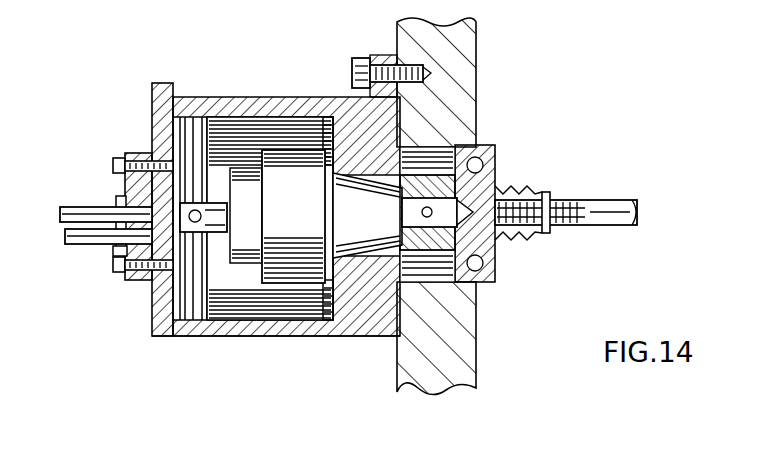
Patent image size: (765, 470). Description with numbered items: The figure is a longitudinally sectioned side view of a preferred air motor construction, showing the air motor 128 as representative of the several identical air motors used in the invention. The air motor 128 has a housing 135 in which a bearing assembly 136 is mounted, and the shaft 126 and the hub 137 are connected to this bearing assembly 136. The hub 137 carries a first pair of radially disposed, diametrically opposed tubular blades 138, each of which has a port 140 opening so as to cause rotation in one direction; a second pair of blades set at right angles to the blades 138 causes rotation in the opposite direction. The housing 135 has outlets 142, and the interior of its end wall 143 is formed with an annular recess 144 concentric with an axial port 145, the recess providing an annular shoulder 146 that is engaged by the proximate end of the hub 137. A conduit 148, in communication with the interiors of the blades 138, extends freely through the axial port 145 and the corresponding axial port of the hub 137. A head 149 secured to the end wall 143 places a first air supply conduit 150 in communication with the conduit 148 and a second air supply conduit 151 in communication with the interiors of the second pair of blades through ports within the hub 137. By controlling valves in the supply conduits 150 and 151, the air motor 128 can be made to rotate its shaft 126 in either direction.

The shaft 126 is at (608, 226).
The air motor 128 is at (376, 338).
The housing 135 is at (342, 338).
The bearing assembly 136 is at (293, 160).
The hub 137 is at (228, 209).
The tubular blades 138 is at (218, 120).
The port 140 is at (187, 110).
The outlets 142 is at (308, 338).
The end wall 143 is at (153, 313).
The annular recess 144 is at (140, 283).
The axial port 145 is at (123, 198).
The annular shoulder 146 is at (114, 252).
The conduit 148 is at (116, 200).
The head 149 is at (151, 147).
The first air supply conduit 150 is at (60, 220).
The second air supply conduit 151 is at (77, 244).